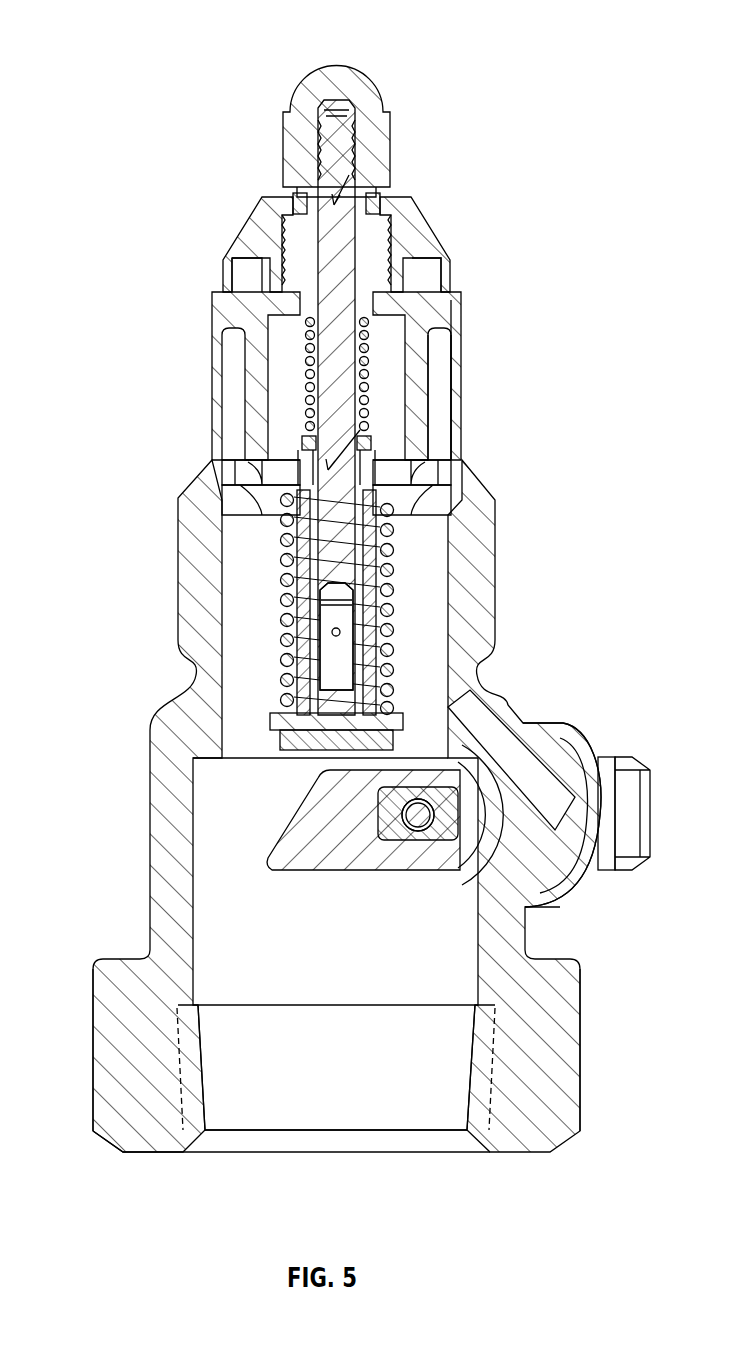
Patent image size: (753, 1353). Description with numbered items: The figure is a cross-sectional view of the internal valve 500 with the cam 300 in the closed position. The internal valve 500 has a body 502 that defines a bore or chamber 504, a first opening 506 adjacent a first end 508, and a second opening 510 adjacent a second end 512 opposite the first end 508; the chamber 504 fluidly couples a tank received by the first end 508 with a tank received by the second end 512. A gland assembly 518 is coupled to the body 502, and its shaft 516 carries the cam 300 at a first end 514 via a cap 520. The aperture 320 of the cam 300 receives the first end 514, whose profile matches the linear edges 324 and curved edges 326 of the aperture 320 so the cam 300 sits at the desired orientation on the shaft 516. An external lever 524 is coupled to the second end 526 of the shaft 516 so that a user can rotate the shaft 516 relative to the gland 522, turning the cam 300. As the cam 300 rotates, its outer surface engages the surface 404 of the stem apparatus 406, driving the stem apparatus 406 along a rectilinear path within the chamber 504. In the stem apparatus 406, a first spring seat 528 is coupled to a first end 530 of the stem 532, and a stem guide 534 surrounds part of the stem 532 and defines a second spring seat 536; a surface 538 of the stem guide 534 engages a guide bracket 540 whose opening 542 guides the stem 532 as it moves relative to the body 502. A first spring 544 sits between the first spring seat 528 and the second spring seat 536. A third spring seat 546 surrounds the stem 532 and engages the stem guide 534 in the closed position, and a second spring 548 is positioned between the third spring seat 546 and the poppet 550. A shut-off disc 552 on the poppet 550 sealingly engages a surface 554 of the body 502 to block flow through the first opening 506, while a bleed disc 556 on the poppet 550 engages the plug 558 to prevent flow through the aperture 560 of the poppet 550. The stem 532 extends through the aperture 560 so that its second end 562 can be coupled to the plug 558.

The internal valve 500 is at (128, 42).
The body 502 is at (95, 962).
The chamber 504 is at (250, 612).
The first opening 506 is at (256, 318).
The first end 508 is at (240, 298).
The second opening 510 is at (266, 1178).
The second end 512 is at (136, 1155).
The first end of the shaft 514 is at (427, 800).
The shaft 516 is at (560, 910).
The gland assembly 518 is at (652, 676).
The cap 520 is at (380, 842).
The gland 522 is at (572, 738).
The external lever 524 is at (628, 778).
The second end of the shaft 526 is at (630, 856).
The first spring seat 528 is at (266, 732).
The first end of the stem 530 is at (272, 682).
The stem 532 is at (306, 410).
The stem guide 534 is at (388, 562).
The second spring seat 536 is at (262, 480).
The surface of the stem guide 538 is at (410, 474).
The guide bracket 540 is at (392, 476).
The opening of the guide bracket 542 is at (372, 432).
The first spring 544 is at (368, 640).
The third spring seat 546 is at (336, 430).
The second spring 548 is at (445, 385).
The poppet 550 is at (415, 235).
The shut-off disc 552 is at (450, 290).
The surface of the body 554 is at (465, 305).
The bleed disc 556 is at (294, 200).
The plug 558 is at (368, 82).
The aperture of the poppet 560 is at (380, 200).
The second end of the stem 562 is at (350, 160).
The cam 300 is at (275, 820).
The aperture 320 is at (330, 862).
The linear edges 324 is at (445, 840).
The curved edges 326 is at (540, 880).
The surface 404 is at (300, 756).
The stem apparatus 406 is at (256, 576).